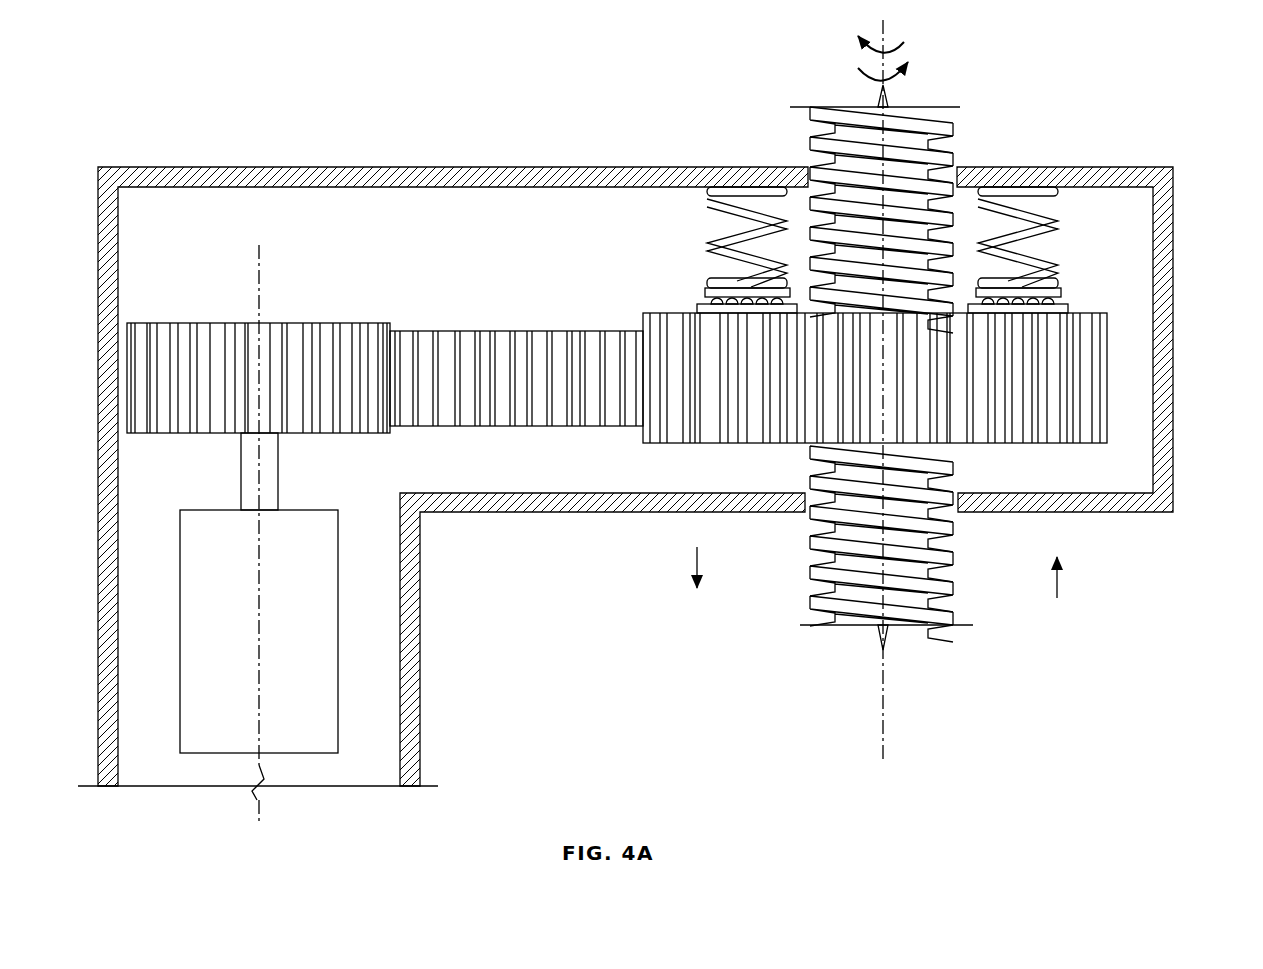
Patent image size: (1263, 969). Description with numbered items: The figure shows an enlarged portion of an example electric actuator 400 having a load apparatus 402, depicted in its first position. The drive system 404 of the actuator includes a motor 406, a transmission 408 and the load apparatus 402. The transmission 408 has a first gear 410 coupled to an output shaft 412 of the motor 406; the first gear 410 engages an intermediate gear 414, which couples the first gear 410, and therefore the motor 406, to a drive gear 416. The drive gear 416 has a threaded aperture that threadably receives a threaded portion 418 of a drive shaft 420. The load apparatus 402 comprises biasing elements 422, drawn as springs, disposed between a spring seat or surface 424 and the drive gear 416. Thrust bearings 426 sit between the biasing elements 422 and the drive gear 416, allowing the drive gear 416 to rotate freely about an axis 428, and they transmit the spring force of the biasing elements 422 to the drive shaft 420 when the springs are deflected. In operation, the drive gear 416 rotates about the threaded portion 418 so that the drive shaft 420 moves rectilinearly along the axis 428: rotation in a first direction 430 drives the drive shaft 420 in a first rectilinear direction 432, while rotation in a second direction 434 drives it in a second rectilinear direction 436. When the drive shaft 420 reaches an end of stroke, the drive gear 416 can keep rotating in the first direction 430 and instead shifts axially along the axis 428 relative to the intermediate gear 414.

The electric actuator 400 is at (170, 68).
The load apparatus 402 is at (653, 449).
The drive system 404 is at (185, 214).
The motor 406 is at (338, 620).
The transmission 408 is at (676, 353).
The first gear 410 is at (183, 322).
The output shaft 412 is at (278, 472).
The intermediate gear 414 is at (543, 330).
The drive gear 416 is at (1107, 378).
The threaded portion 418 is at (918, 349).
The drive shaft 420 is at (850, 130).
The biasing elements 422 is at (708, 245).
The spring seat 424 is at (740, 186).
The thrust bearings 426 is at (703, 293).
The axis 428 is at (883, 715).
The first direction 430 is at (898, 52).
The first rectilinear direction 432 is at (697, 565).
The second direction 434 is at (893, 85).
The second rectilinear direction 436 is at (1060, 582).